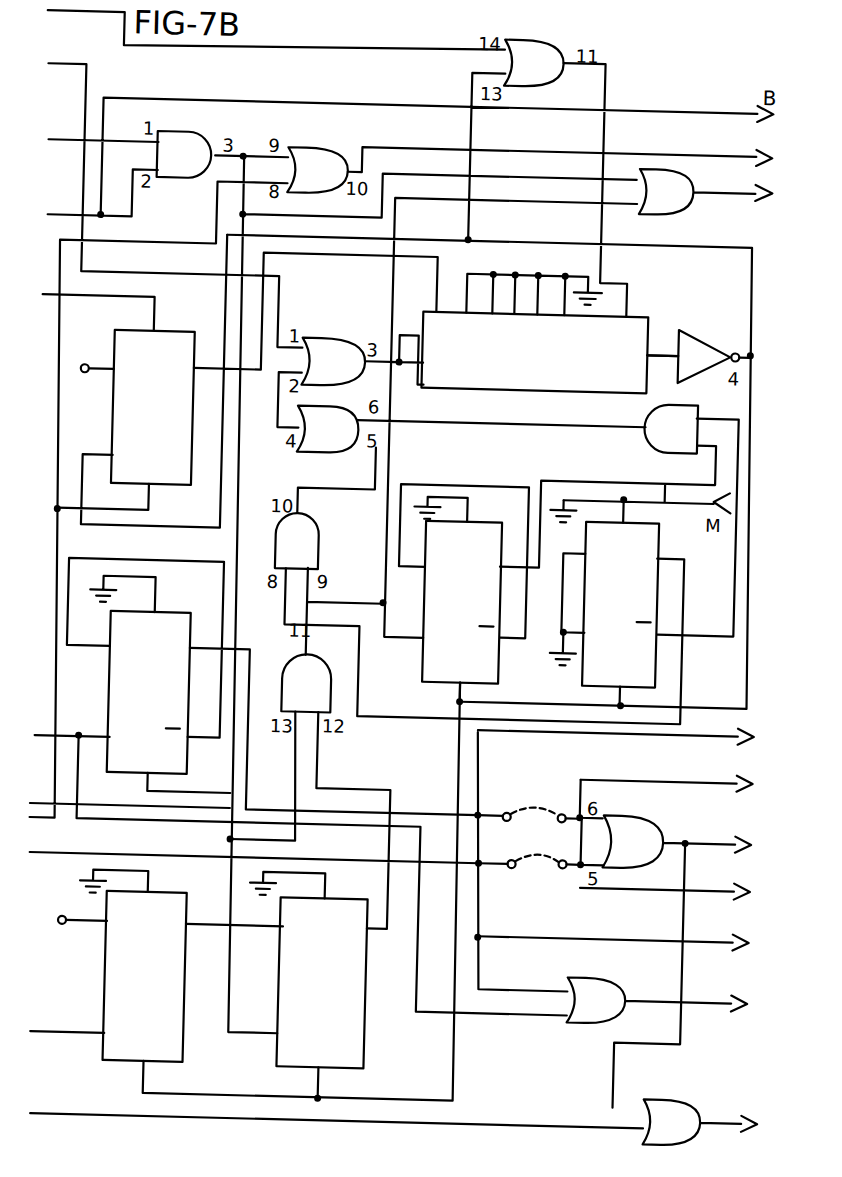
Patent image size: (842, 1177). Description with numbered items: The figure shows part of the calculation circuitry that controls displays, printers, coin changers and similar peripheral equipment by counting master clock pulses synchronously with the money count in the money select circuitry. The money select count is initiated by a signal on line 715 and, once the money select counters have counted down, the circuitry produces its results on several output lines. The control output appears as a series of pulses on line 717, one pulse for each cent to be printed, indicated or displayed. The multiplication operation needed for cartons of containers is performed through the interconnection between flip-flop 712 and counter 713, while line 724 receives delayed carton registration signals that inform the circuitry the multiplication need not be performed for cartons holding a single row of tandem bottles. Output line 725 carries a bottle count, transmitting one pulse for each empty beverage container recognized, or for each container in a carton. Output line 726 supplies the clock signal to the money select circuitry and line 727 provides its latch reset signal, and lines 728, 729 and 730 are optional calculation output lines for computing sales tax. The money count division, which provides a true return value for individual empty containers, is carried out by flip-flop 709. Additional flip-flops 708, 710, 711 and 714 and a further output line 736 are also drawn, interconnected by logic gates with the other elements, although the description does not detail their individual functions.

The flip-flop 708 is at (126, 402).
The flip-flop 709 is at (129, 696).
The flip-flop 710 is at (138, 987).
The flip-flop 711 is at (376, 1013).
The flip-flop 712 is at (449, 649).
The counter 713 is at (648, 311).
The flip-flop 714 is at (673, 514).
The line 715 is at (706, 138).
The line 717 is at (726, 824).
The line 724 is at (675, 463).
The output line 725 is at (752, 177).
The output line 726 is at (688, 983).
The line 727 is at (740, 1102).
The calculation output line 728 is at (688, 723).
The calculation output line 729 is at (688, 761).
The calculation output line 730 is at (645, 880).
The output line U 736 is at (584, 923).